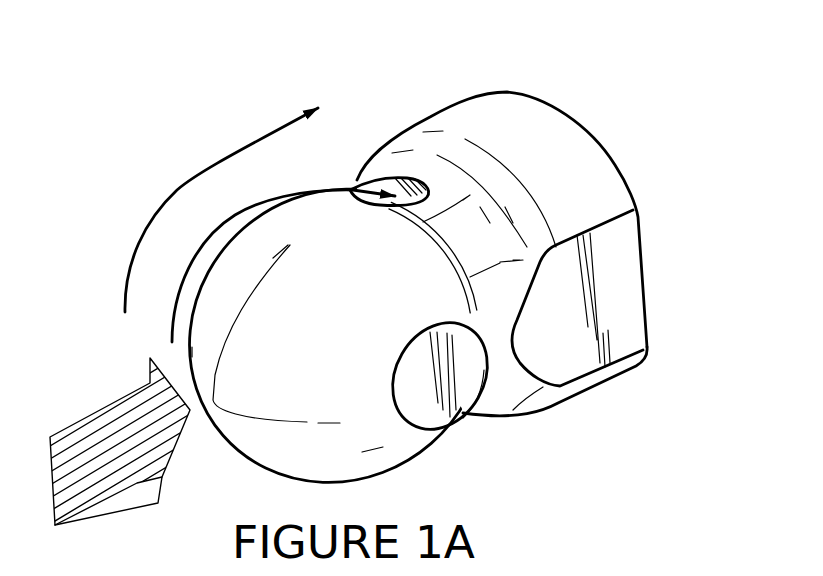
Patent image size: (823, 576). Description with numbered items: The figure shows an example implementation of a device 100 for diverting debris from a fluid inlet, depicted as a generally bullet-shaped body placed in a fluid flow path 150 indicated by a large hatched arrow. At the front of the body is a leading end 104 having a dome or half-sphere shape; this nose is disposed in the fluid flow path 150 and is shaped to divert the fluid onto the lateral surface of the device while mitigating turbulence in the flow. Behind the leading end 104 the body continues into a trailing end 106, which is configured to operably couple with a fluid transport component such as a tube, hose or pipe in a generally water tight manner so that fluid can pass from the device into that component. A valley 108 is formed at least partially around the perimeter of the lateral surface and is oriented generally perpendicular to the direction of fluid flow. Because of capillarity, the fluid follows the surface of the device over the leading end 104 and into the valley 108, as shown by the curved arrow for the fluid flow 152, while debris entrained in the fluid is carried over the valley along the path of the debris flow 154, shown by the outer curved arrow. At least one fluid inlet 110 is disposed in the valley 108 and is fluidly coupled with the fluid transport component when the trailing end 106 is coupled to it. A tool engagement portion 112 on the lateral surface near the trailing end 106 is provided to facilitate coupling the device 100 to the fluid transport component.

The device for diverting debris from a fluid inlet 100 is at (133, 90).
The leading end 104 is at (177, 352).
The trailing end 106 is at (590, 118).
The valley 108 is at (356, 176).
The fluid inlet 110 is at (424, 202).
The tool engagement portion 112 is at (632, 293).
The fluid flow path 150 is at (88, 417).
The fluid flow into the valley 152 is at (273, 198).
The flow of debris 154 is at (173, 192).